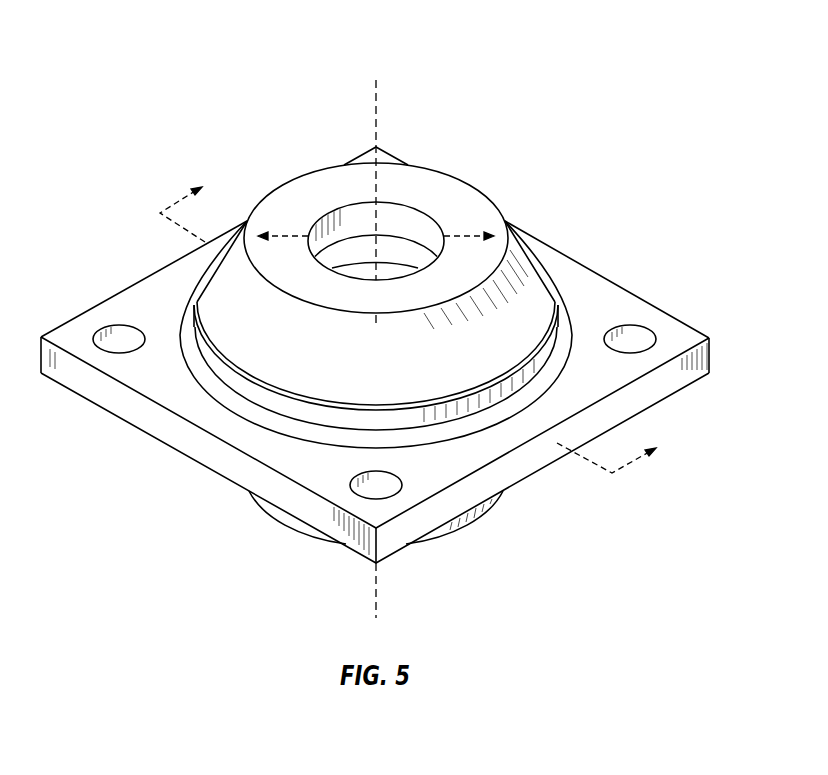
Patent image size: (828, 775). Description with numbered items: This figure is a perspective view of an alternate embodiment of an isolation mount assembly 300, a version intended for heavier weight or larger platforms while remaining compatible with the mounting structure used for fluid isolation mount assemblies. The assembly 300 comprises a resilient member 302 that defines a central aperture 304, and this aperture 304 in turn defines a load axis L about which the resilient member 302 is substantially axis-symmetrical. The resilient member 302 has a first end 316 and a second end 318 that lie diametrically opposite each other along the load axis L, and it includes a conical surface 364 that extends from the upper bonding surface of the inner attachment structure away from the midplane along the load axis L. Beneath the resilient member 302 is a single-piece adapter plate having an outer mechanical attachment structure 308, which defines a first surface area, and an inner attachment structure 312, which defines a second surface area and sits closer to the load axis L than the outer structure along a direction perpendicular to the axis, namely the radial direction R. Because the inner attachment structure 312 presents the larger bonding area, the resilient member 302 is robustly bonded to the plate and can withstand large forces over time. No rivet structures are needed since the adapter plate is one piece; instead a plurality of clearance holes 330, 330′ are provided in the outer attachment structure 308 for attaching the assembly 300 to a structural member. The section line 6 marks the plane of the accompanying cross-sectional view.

The isolation mount assembly 300 is at (634, 50).
The resilient member 302 is at (504, 172).
The central aperture 304 is at (403, 222).
The outer mechanical attachment structure 308 is at (599, 297).
The inner attachment structure 312 is at (549, 275).
The first end 316 is at (279, 528).
The second end 318 is at (340, 187).
The clearance holes 330 is at (377, 488).
The clearance hole 330′ is at (632, 338).
The conical surface 364 is at (393, 359).
The load axis L is at (376, 96).
The radial direction R is at (461, 234).
The section line 6- 6 is at (416, 323).